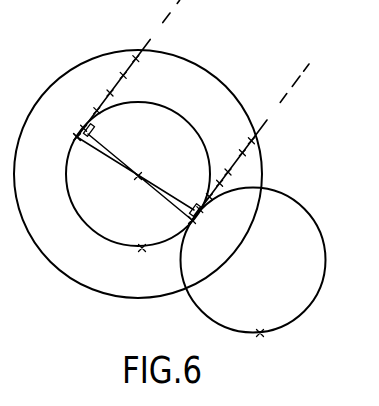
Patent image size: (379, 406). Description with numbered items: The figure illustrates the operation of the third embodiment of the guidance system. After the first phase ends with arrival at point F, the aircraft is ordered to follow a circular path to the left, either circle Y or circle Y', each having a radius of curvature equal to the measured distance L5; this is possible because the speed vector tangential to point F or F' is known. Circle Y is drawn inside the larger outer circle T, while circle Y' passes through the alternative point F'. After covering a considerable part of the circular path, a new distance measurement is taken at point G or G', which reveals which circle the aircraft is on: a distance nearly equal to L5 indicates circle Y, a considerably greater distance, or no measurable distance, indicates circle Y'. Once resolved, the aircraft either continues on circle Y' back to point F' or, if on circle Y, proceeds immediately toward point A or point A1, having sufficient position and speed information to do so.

The outer circle / trajectory circle T is at (233, 90).
The circle Y is at (138, 157).
The circle Y' is at (253, 256).
The radius of curvature L5 is at (103, 146).
The point A is at (138, 173).
The point A1 is at (159, 162).